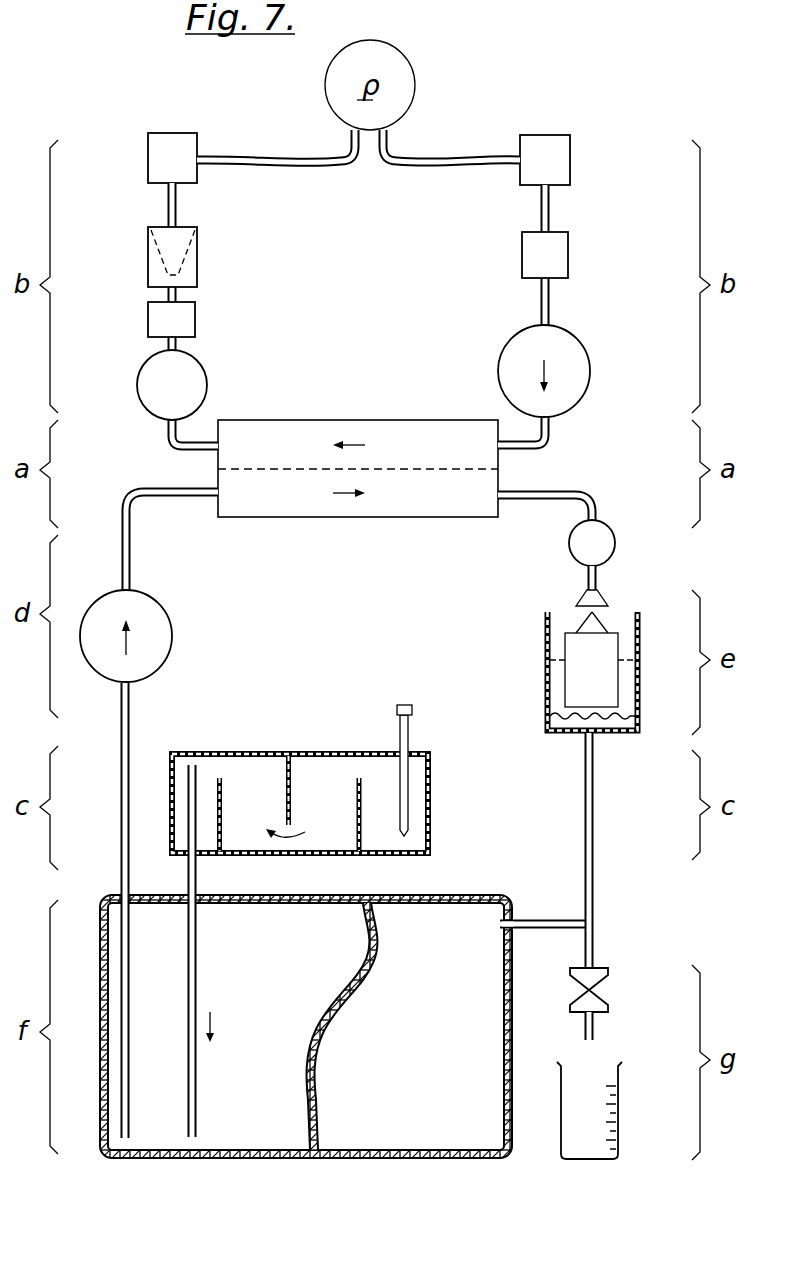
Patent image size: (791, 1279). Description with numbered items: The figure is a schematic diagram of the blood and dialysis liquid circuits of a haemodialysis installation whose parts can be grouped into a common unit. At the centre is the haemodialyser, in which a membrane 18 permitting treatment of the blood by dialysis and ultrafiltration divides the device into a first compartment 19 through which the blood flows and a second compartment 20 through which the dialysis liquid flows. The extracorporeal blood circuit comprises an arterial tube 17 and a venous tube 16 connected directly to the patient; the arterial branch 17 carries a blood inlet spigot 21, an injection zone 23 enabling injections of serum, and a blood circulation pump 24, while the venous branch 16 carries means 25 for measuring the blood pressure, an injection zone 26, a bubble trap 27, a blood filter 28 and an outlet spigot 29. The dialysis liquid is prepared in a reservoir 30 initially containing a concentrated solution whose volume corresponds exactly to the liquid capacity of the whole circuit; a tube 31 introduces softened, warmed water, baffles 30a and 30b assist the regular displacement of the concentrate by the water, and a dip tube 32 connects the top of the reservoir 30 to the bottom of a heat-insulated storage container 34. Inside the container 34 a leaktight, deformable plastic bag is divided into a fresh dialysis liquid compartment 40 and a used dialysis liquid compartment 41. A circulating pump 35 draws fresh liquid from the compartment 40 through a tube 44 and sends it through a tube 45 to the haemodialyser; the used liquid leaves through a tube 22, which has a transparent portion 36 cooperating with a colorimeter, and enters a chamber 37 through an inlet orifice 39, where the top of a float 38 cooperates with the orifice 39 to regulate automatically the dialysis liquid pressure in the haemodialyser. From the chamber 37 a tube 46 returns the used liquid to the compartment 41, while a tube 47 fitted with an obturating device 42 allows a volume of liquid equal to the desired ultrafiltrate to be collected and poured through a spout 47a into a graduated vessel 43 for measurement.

The venous tube 16 is at (296, 168).
The arterial tube 17 is at (458, 165).
The membrane 18 is at (416, 478).
The first compartment 19 is at (404, 442).
The second compartment 20 is at (308, 518).
The valve 21 is at (549, 143).
The tube 22 is at (587, 494).
The injection zone 23 is at (568, 250).
The blood circulation pump 24 is at (569, 353).
The means for measuring the pressure of the blood 25 is at (200, 392).
The injection zone 26 is at (193, 325).
The bubble trap 27 is at (197, 282).
The blood filter 28 is at (190, 254).
The outlet spigot 29 is at (182, 137).
The reservoir 30 is at (438, 792).
The baffle 30a is at (293, 777).
The baffle 30b is at (361, 830).
The tube 31 is at (409, 741).
The dip tube 32 is at (188, 879).
The storage container 34 is at (516, 1061).
The circulating pump 35 is at (163, 630).
The transparent portion 36 is at (575, 547).
The chamber 37 is at (568, 735).
The float 38 is at (584, 689).
The inlet orifice 39 is at (586, 600).
The fresh dialysis liquid storage compartment 40 is at (242, 935).
The used dialysis liquid storage compartment 41 is at (450, 935).
The obturating device 42 is at (601, 984).
The graduated vessel 43 is at (598, 1079).
The connection tube 44 is at (129, 733).
The connection tube 45 is at (131, 561).
The tube 46 is at (540, 921).
The tube 47 is at (594, 943).
The pouring spout 47a is at (594, 1027).